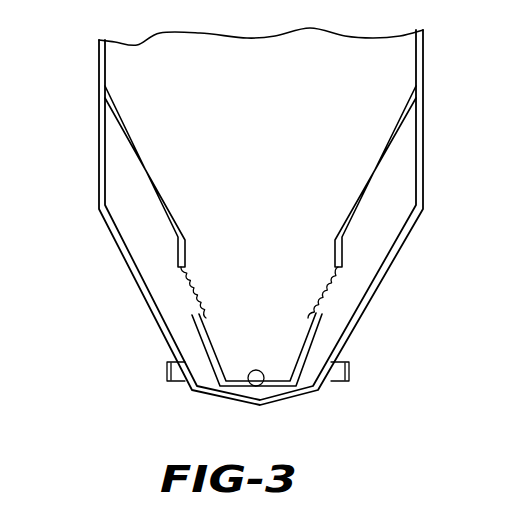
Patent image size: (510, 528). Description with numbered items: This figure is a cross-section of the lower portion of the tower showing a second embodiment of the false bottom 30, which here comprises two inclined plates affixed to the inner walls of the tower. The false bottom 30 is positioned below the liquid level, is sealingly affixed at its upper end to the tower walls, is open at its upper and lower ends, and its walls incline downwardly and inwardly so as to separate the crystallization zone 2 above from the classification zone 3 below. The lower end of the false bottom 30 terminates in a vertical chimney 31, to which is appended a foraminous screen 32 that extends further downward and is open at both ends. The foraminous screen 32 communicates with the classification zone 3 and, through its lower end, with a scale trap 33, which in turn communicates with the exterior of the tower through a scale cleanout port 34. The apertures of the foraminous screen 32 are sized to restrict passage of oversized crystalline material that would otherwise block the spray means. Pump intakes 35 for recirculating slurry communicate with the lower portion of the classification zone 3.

The crystallization zone 2 is at (272, 127).
The classification zone 3 is at (248, 236).
The false bottom 30 is at (122, 141).
The vertical chimney 31 is at (178, 241).
The foraminous screen 32 is at (322, 285).
The scale trap 33 is at (302, 351).
The scale cleanout port 34 is at (256, 386).
The pump intakes 35 is at (165, 374).